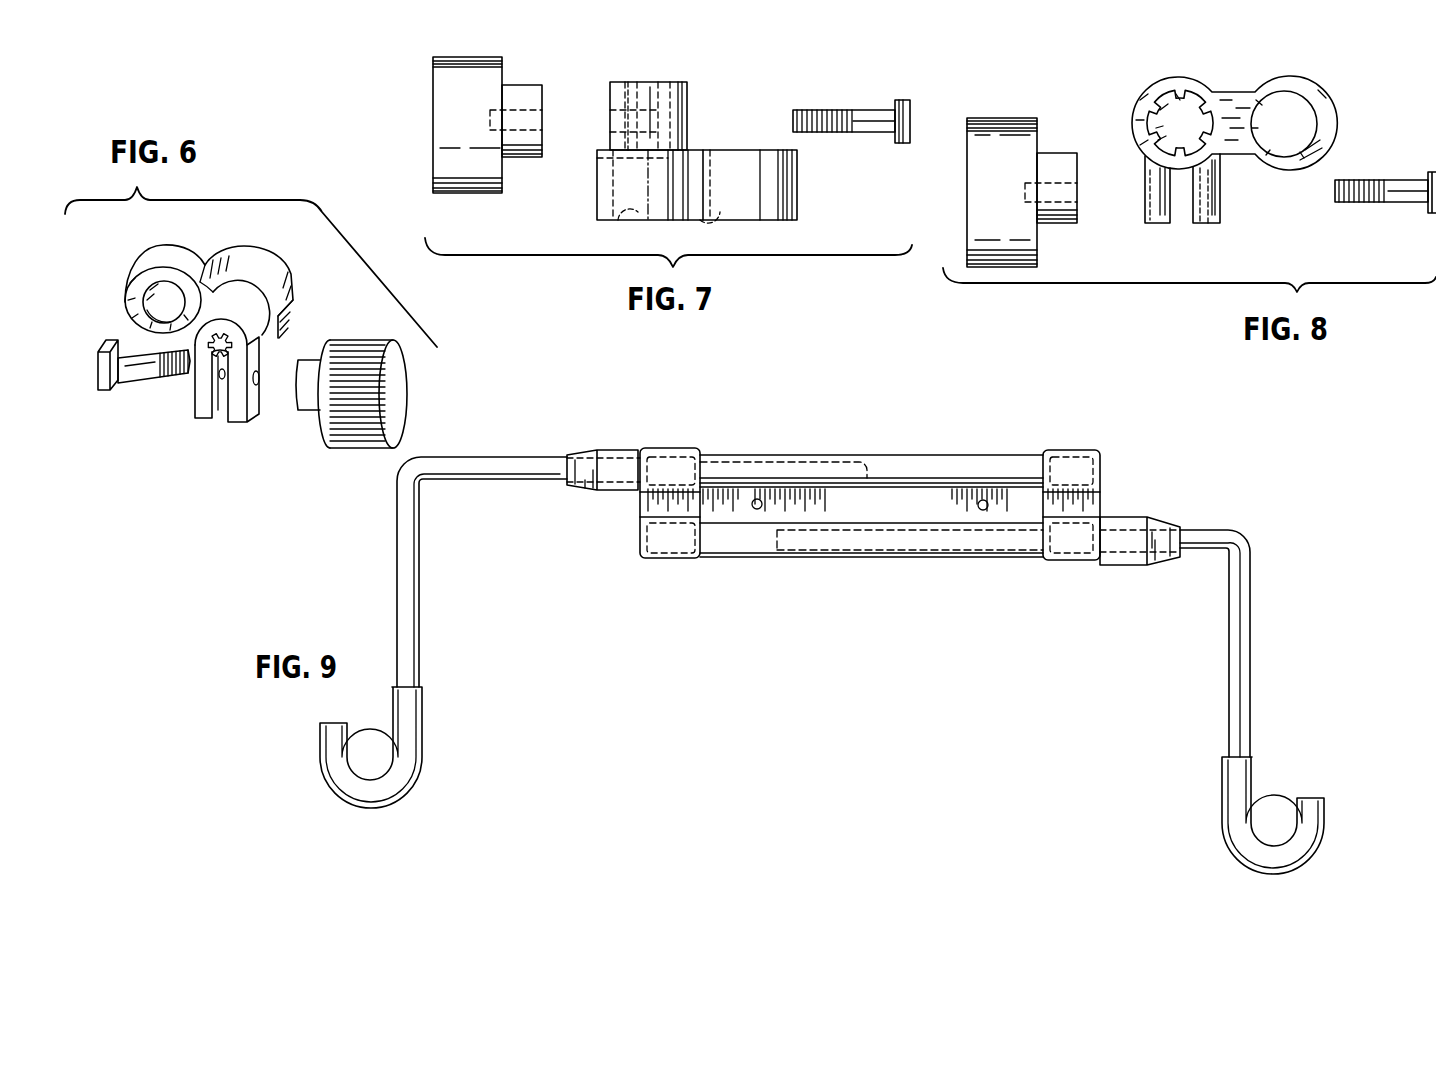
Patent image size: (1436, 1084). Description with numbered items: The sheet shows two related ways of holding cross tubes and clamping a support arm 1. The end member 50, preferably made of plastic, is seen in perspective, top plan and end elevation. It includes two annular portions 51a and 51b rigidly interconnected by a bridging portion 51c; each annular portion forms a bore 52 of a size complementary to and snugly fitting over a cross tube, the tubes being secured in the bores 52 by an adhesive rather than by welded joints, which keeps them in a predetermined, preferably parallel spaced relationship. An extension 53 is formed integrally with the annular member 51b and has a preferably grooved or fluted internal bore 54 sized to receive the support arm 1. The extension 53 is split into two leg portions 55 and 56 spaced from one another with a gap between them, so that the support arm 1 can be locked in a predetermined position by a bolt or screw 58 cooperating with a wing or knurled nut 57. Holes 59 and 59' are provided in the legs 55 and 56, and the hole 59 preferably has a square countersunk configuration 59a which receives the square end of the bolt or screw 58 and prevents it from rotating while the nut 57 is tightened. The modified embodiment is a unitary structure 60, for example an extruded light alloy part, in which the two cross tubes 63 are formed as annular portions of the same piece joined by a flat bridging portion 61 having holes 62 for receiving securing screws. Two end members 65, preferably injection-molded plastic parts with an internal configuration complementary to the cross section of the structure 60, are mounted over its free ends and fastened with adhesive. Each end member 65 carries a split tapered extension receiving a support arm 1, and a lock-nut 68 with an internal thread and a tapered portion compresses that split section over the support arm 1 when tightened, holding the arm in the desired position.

In FIG. 9, the support arm 1 is at (410, 655).
In FIG. 6, the end member 50 is at (117, 253).
In FIG. 7, the end member 50 is at (819, 177).
In FIG. 8, the end member 50 is at (1362, 107).
In FIG. 6, the annular portion 51a is at (123, 305).
In FIG. 7, the annular portion 51a is at (798, 208).
In FIG. 8, the annular portion 51a is at (1312, 87).
In FIG. 6, the annular portion 51b is at (277, 268).
In FIG. 7, the annular portion 51b is at (597, 207).
In FIG. 8, the annular portion 51b is at (1157, 85).
In FIG. 6, the bridging portion 51c is at (213, 267).
In FIG. 7, the bridging portion 51c is at (697, 157).
In FIG. 8, the bridging portion 51c is at (1233, 92).
In FIG. 6, the bore 52 is at (163, 287).
In FIG. 7, the bore 52 is at (630, 220).
In FIG. 8, the bore 52 is at (1220, 145).
In FIG. 6, the extension 53 is at (277, 312).
In FIG. 7, the extension 53 is at (647, 92).
In FIG. 6, the internal bore 54 is at (240, 347).
In FIG. 7, the internal bore 54 is at (627, 82).
In FIG. 8, the internal bore 54 is at (1157, 123).
In FIG. 6, the leg portion 55 is at (200, 403).
In FIG. 8, the leg portion 55 is at (1203, 220).
In FIG. 6, the leg portion 56 is at (240, 413).
In FIG. 8, the leg portion 56 is at (1148, 220).
In FIG. 6, the wing or knurled nut 57 is at (343, 427).
In FIG. 7, the wing or knurled nut 57 is at (502, 57).
In FIG. 8, the wing or knurled nut 57 is at (1025, 132).
In FIG. 6, the bolt or screw 58 is at (130, 383).
In FIG. 7, the bolt or screw 58 is at (867, 117).
In FIG. 8, the bolt or screw 58 is at (1370, 205).
In FIG. 6, the hole 59 is at (197, 414).
In FIG. 8, the hole 59 is at (1178, 216).
In FIG. 6, the hole 59' is at (273, 411).
In FIG. 8, the hole 59' is at (1126, 191).
In FIG. 8, the square countersunk configuration 59a is at (1223, 200).
In FIG. 9, the unitary structure 60 is at (888, 443).
In FIG. 9, the flat bridging portion 61 is at (910, 516).
In FIG. 9, the hole 62 is at (763, 505).
In FIG. 9, the cross tube 63 is at (965, 462).
In FIG. 9, the end member 65 is at (665, 439).
In FIG. 9, the lock-nut 68 is at (607, 445).